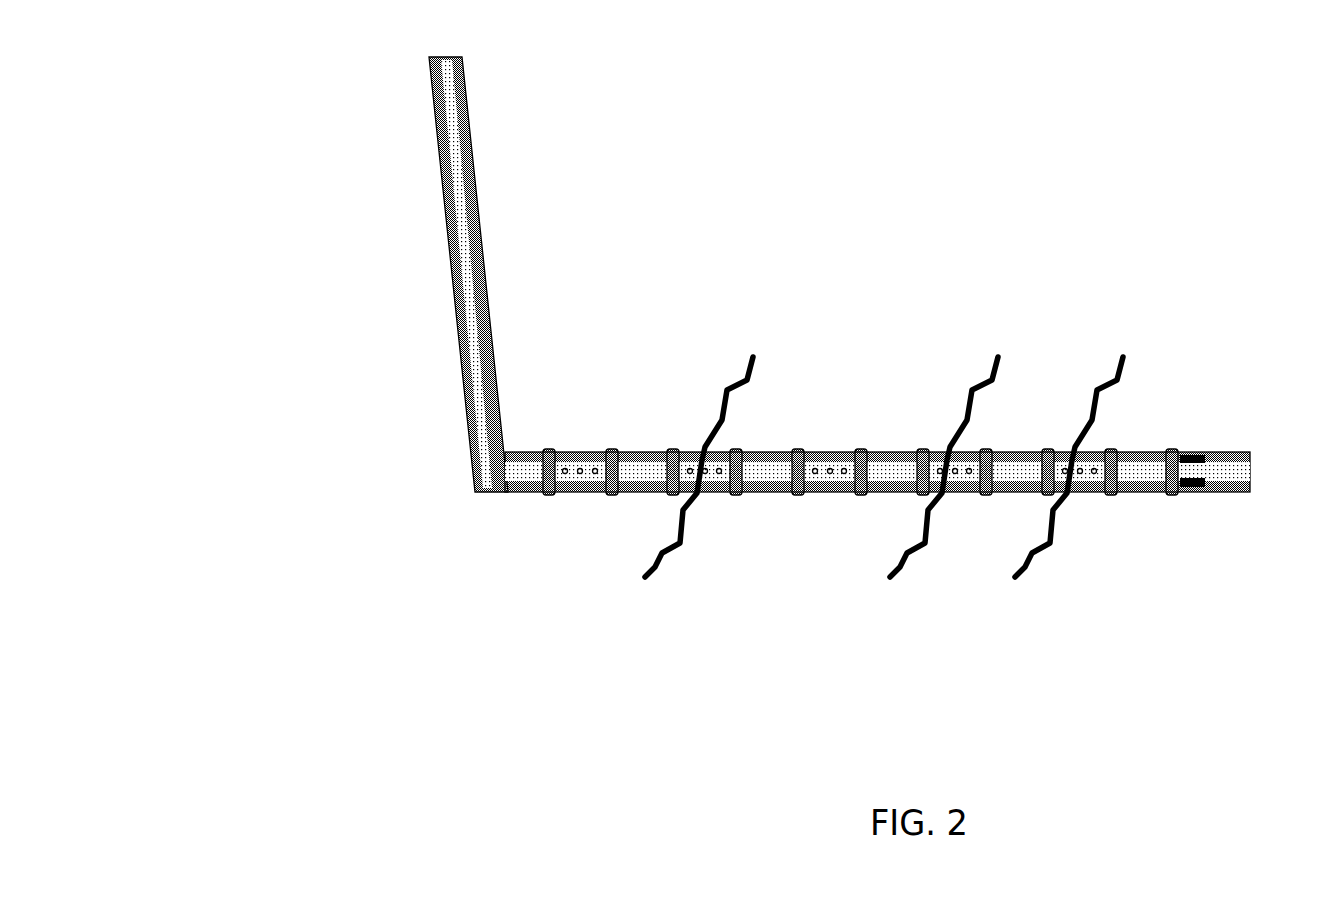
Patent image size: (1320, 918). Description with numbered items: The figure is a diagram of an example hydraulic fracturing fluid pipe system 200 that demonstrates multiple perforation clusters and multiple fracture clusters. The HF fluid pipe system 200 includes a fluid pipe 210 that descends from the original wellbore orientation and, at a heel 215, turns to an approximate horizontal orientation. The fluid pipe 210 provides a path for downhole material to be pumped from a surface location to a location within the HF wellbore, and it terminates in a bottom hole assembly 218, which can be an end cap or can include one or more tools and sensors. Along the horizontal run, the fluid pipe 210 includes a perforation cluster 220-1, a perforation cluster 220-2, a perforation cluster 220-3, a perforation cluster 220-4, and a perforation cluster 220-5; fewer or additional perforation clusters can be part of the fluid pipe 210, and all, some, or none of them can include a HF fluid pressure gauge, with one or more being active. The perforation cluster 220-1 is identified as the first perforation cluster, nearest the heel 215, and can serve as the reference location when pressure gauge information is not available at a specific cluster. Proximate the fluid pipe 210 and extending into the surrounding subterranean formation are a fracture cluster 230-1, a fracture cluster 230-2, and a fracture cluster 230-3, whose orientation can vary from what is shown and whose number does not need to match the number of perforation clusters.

The HF fluid pipe system 200 is at (362, 110).
The heel 215 is at (473, 487).
The fluid pipe 210 is at (517, 492).
The bottom hole assembly 218 is at (1183, 452).
The perforation cluster 220-1 is at (573, 452).
The perforation cluster 220-2 is at (690, 452).
The perforation cluster 220-3 is at (842, 452).
The perforation cluster 220-4 is at (942, 452).
The perforation cluster 220-5 is at (1068, 452).
The fracture cluster 230-1 is at (751, 356).
The fracture cluster 230-2 is at (996, 356).
The fracture cluster 230-3 is at (1121, 356).